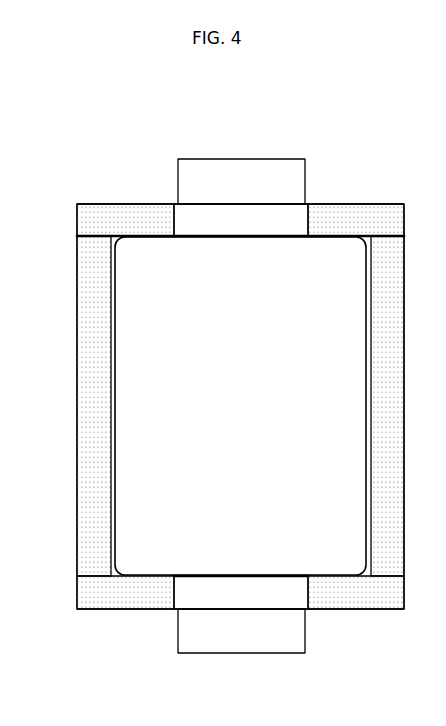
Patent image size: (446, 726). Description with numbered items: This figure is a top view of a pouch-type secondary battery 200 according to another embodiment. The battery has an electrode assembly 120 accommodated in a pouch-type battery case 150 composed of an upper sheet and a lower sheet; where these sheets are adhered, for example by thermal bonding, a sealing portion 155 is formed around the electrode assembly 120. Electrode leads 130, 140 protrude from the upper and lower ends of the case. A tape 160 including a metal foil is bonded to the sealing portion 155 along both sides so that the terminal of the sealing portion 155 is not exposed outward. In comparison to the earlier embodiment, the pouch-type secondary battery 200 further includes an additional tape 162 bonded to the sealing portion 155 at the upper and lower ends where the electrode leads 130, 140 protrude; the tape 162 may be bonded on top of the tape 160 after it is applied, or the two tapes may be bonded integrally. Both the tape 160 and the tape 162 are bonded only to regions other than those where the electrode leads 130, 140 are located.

The pouch-type secondary battery 200 is at (363, 145).
The electrode assembly 120 is at (263, 402).
The electrode lead 130 is at (243, 168).
The electrode lead 140 is at (242, 652).
The pouch-type battery case 150 is at (309, 204).
The sealing portion 155 is at (197, 213).
The tape 160 is at (84, 254).
The tape 162 is at (140, 218).